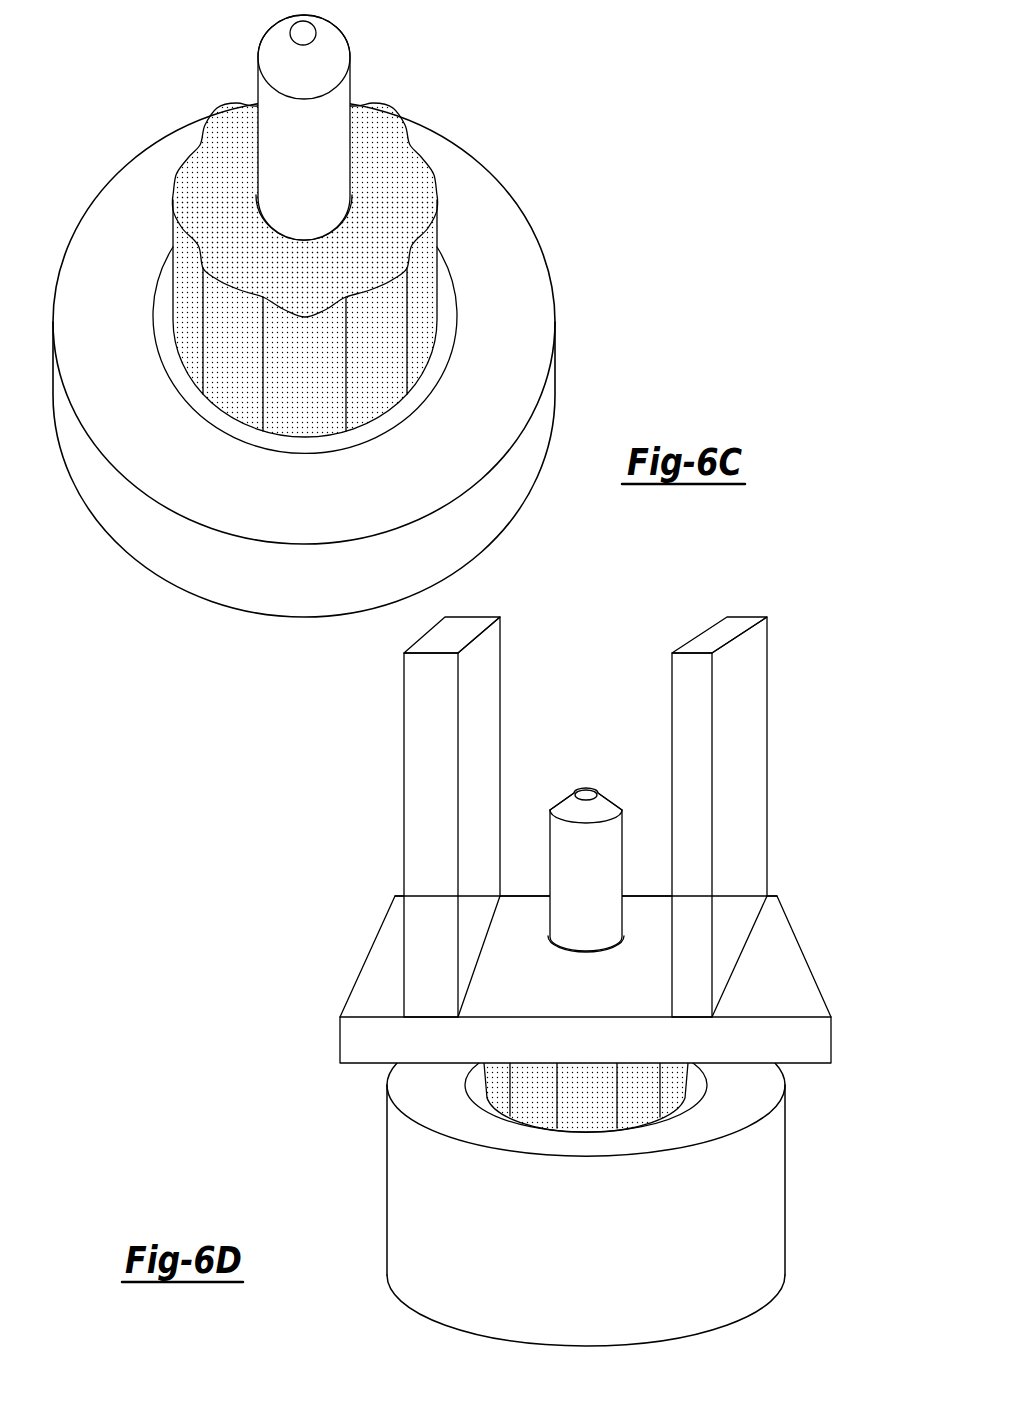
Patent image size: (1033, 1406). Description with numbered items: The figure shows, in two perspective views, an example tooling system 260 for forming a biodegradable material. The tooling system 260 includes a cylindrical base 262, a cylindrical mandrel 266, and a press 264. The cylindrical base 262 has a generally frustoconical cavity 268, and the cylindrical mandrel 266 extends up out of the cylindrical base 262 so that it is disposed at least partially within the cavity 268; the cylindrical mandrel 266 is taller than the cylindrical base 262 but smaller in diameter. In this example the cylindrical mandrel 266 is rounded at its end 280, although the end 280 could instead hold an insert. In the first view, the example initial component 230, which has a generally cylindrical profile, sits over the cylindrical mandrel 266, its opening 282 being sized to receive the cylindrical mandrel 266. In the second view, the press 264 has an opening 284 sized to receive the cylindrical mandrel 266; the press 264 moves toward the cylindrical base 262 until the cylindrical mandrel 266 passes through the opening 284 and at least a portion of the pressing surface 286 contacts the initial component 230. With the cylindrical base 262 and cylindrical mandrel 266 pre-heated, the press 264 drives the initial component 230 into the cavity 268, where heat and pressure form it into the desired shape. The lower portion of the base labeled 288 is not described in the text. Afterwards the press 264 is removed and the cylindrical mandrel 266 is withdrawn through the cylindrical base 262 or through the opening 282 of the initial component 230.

In FIG. 6C, the initial component 230 is at (383, 123).
In FIG. 6D, the initial component 230 is at (684, 1086).
In FIG. 6C, the tooling system 260 is at (358, 316).
In FIG. 6D, the tooling system 260 is at (579, 1205).
In FIG. 6C, the cylindrical base 262 is at (150, 540).
In FIG. 6D, the cylindrical base 262 is at (569, 1204).
In FIG. 6D, the press 264 is at (757, 785).
In FIG. 6C, the cylindrical mandrel 266 is at (349, 127).
In FIG. 6D, the cylindrical mandrel 266 is at (596, 835).
In FIG. 6C, the cavity 268 is at (448, 306).
In FIG. 6C, the end 280 is at (233, 47).
In FIG. 6D, the end 280 is at (611, 785).
In FIG. 6C, the opening 282 is at (361, 187).
In FIG. 6D, the opening 284 is at (625, 928).
In FIG. 6D, the pressing surface 286 is at (348, 1079).
In FIG. 6D, the base 288 is at (379, 1300).